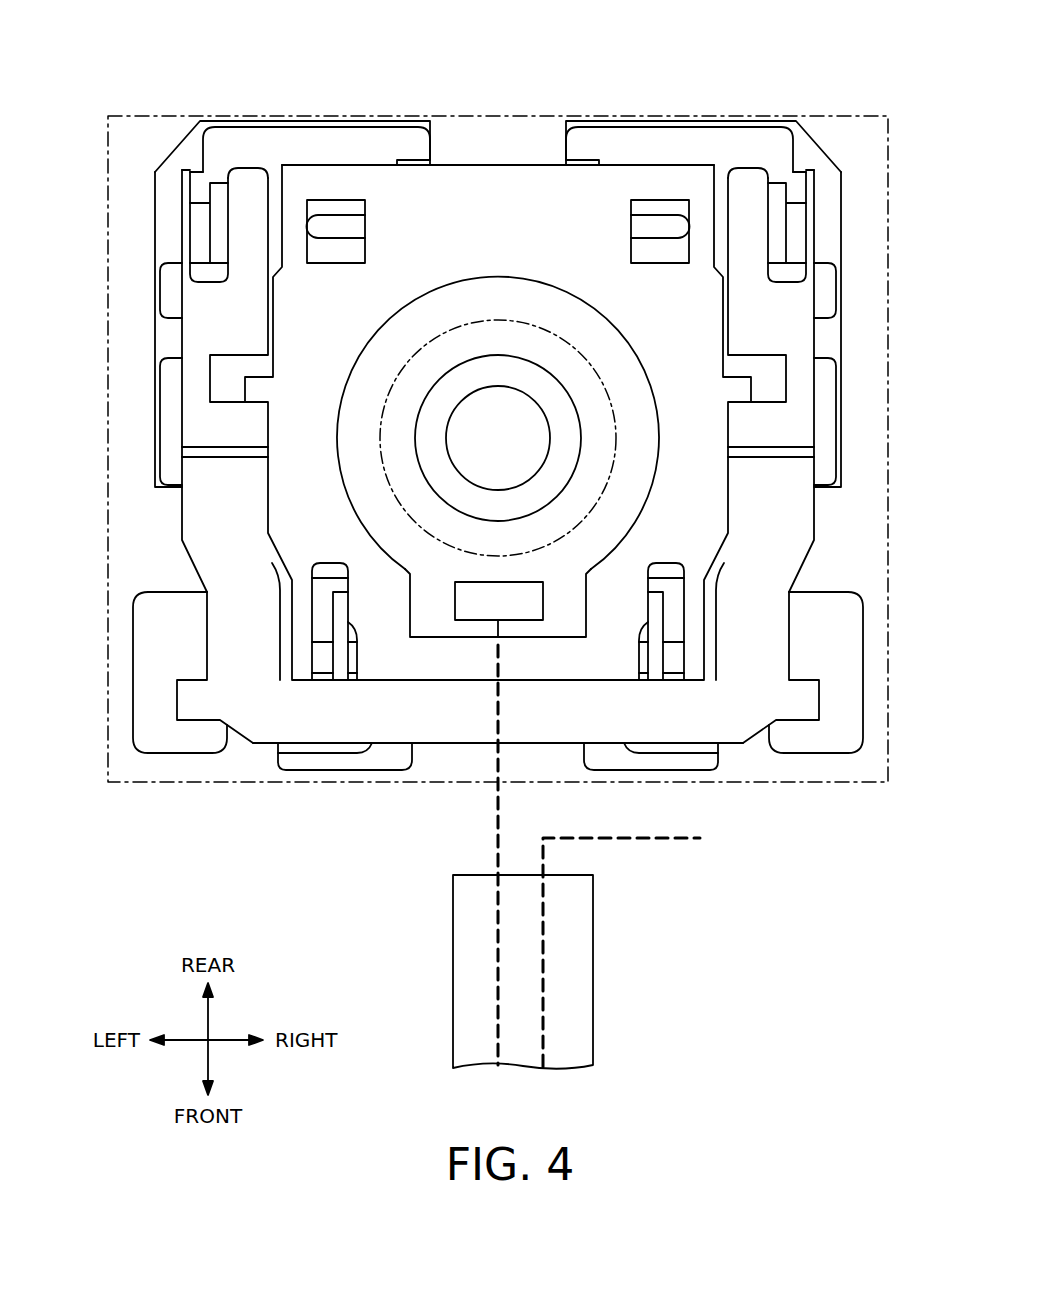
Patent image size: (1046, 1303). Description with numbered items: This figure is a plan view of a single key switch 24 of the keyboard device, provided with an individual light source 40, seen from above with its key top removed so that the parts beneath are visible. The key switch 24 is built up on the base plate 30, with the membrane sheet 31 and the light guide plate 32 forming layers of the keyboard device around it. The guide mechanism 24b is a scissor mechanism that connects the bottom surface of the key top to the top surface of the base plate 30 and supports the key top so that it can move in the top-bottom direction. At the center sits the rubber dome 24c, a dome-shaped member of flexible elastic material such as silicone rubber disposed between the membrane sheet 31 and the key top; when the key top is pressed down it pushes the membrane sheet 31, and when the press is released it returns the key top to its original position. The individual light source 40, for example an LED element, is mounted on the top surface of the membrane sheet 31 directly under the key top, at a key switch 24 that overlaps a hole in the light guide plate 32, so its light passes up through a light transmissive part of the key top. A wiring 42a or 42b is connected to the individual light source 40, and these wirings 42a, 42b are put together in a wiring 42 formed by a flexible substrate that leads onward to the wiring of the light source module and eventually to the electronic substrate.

The key switch 24 is at (167, 50).
The guide mechanism 24b is at (393, 665).
The rubber dome 24c is at (490, 320).
The base plate 30 is at (168, 220).
The membrane sheet 31 is at (637, 427).
The light guide plate 32 is at (308, 143).
The individual light source 40 is at (473, 603).
The wiring 42 is at (585, 992).
The wiring 42a is at (493, 963).
The wiring 42b is at (663, 845).